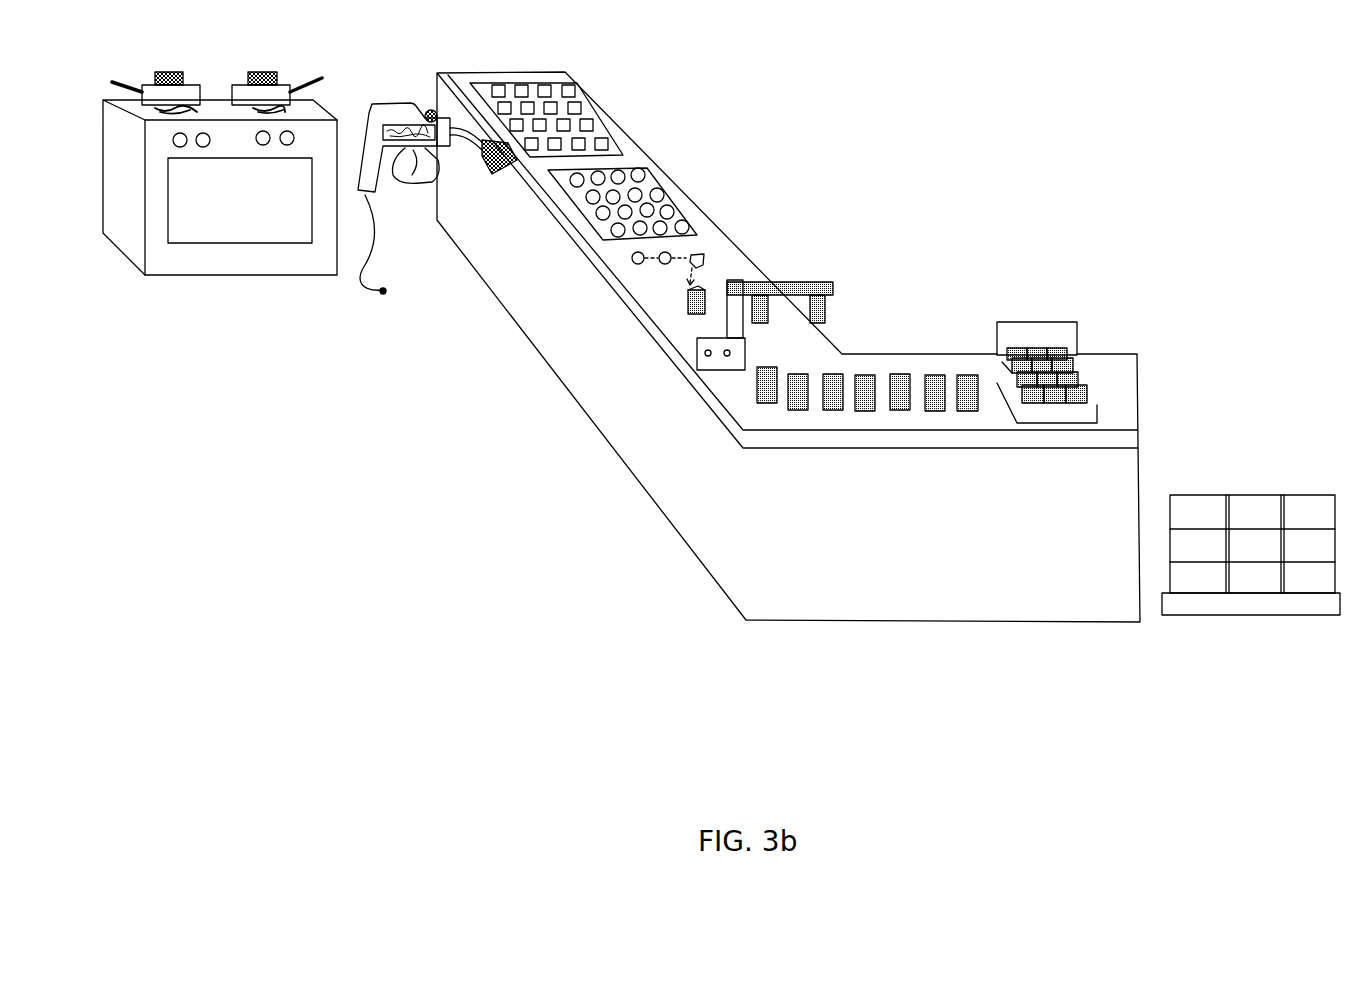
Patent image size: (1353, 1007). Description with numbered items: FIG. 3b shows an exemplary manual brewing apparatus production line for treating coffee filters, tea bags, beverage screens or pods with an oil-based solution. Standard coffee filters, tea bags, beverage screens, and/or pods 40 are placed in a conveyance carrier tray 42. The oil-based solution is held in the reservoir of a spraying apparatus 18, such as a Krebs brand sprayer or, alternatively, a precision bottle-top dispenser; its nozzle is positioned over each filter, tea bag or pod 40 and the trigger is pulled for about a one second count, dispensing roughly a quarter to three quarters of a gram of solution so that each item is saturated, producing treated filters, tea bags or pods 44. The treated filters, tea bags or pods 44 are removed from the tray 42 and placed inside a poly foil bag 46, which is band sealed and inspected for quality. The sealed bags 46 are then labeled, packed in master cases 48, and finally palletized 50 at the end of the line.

The spraying apparatus 18 is at (385, 102).
The filters, tea bags, beverage screens, or pods 40 is at (578, 95).
The conveyance carrier tray 42 is at (595, 130).
The treated filters, tea bags or pods 44 is at (628, 266).
The poly foil bag 46 is at (687, 302).
The master cases 48 is at (1027, 417).
The palletized 50 is at (1236, 468).